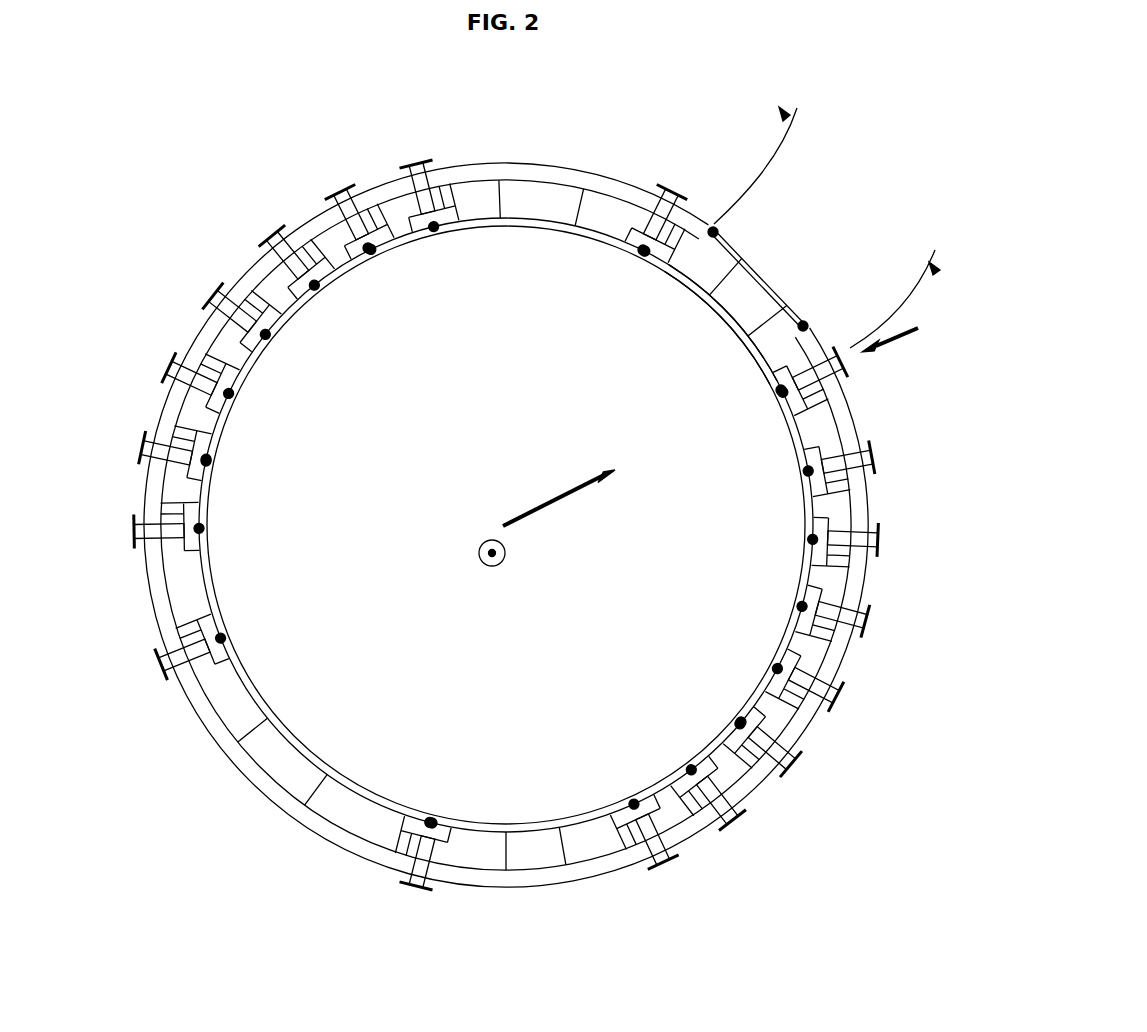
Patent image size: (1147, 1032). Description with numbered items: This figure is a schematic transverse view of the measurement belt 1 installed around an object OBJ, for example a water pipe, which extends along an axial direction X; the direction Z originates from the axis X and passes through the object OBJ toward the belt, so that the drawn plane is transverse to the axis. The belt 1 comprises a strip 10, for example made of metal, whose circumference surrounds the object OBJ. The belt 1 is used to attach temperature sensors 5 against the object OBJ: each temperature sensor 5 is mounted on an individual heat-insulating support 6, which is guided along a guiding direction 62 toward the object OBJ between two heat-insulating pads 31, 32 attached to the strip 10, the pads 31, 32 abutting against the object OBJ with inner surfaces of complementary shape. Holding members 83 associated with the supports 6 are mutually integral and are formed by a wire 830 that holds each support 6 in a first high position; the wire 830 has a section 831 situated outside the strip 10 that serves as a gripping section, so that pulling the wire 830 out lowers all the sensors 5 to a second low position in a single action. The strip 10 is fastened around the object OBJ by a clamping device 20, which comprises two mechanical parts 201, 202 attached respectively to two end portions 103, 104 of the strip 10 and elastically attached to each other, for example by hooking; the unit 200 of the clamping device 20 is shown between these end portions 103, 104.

The measurement belt 1 is at (932, 518).
The temperature sensor 5 is at (370, 256).
The individual heat-insulating support 6 is at (388, 236).
The strip 10 is at (528, 180).
The clamping device 20 is at (745, 254).
The heat-insulating pad 31 is at (598, 222).
The heat-insulating pad 32 is at (398, 232).
The guiding direction 62 is at (895, 340).
The holding member 83 is at (372, 188).
The end portion of the strip 103 is at (718, 228).
The end portion of the strip 104 is at (808, 322).
The straight bar 200 is at (772, 282).
The mechanical part 201 is at (671, 282).
The mechanical part 202 is at (737, 350).
The wire 830 is at (285, 220).
The section of the wire 831 is at (846, 190).
The object OBJ is at (740, 345).
The axial direction X is at (510, 552).
The direction Z is at (559, 486).